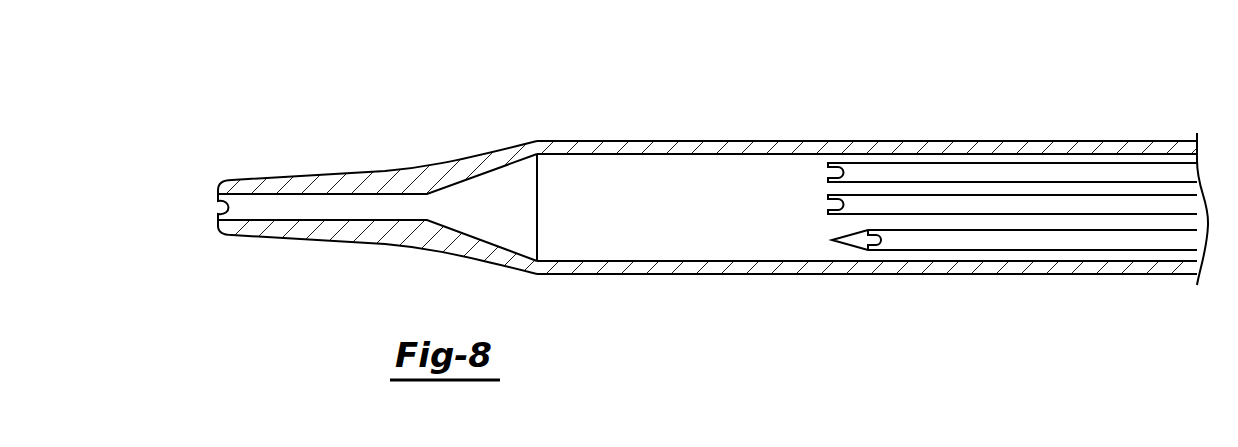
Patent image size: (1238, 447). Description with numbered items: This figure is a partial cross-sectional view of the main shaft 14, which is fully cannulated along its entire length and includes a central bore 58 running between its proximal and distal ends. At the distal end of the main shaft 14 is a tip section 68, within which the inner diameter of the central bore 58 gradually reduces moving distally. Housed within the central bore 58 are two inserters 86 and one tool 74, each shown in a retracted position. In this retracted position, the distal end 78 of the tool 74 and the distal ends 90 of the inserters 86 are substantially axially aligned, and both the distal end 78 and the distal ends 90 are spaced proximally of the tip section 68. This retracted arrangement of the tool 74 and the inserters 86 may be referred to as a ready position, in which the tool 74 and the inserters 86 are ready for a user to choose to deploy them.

The main shaft 14 is at (1081, 116).
The central bore 58 is at (650, 220).
The tip section 68 is at (413, 132).
The tool 74 is at (1042, 260).
The distal end of the tool 78 is at (832, 240).
The inserters 86 is at (924, 187).
The distal ends of the inserters 90 is at (828, 212).